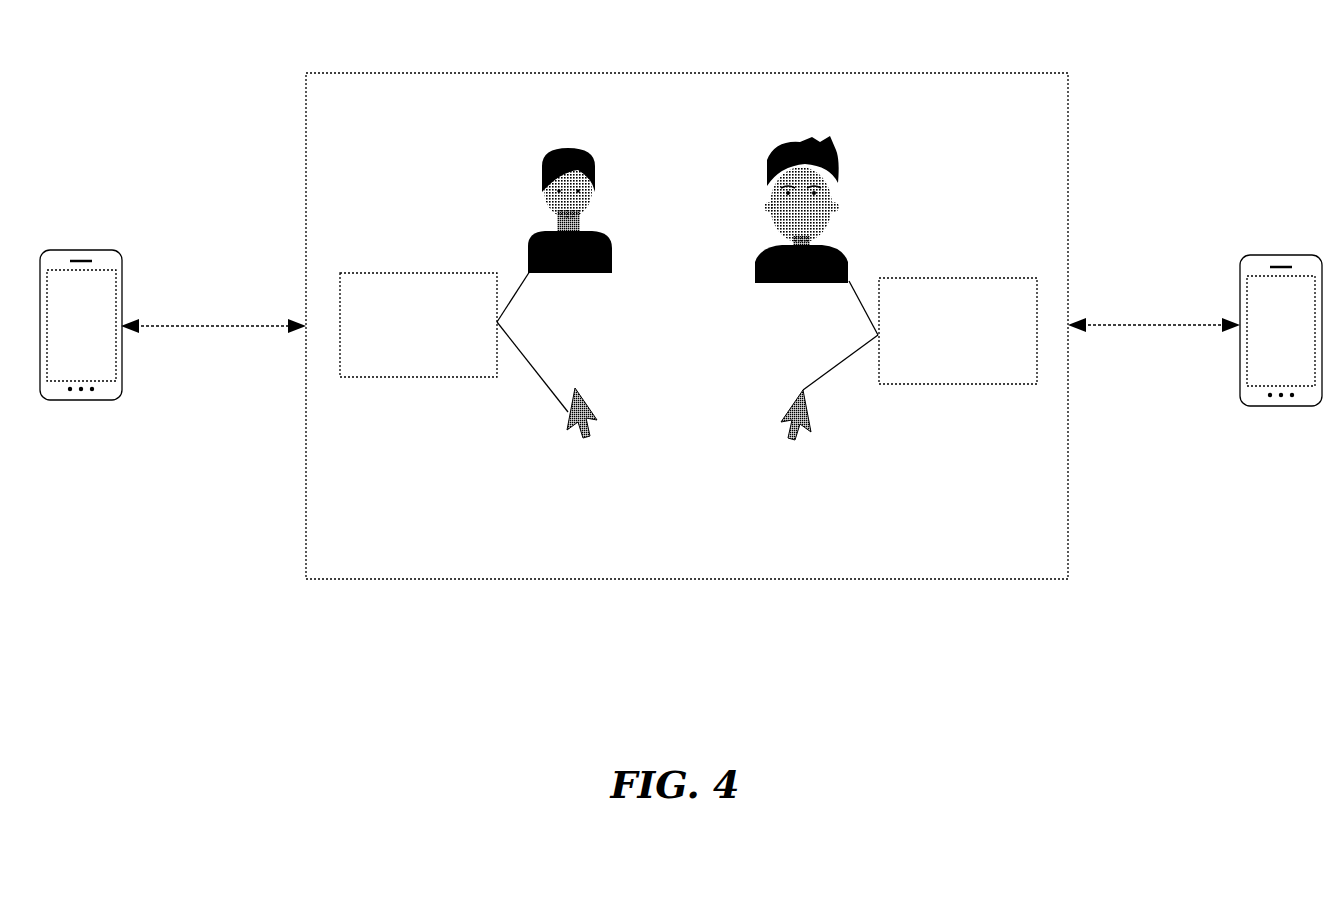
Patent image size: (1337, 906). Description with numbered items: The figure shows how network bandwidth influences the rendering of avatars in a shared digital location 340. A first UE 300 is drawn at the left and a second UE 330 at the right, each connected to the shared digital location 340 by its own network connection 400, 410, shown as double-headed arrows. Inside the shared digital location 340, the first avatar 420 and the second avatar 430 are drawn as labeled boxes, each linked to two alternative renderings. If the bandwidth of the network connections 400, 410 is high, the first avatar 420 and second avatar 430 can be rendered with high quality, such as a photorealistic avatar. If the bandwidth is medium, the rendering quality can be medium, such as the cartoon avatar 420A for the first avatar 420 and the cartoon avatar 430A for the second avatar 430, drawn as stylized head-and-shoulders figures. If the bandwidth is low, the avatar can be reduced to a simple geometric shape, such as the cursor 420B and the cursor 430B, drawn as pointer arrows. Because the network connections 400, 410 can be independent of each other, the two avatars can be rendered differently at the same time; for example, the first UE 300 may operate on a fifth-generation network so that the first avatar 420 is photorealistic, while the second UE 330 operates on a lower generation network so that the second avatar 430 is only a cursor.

The first UE 300 is at (81, 249).
The second UE 330 is at (1283, 254).
The shared digital location 340 is at (685, 73).
The network connection 400 is at (193, 324).
The network connection 410 is at (1132, 323).
The first avatar 420 is at (400, 336).
The cartoon avatar 420A is at (597, 161).
The cursor 420B is at (592, 405).
The second avatar 430 is at (940, 342).
The cartoon avatar 430A is at (832, 152).
The cursor 430B is at (792, 405).